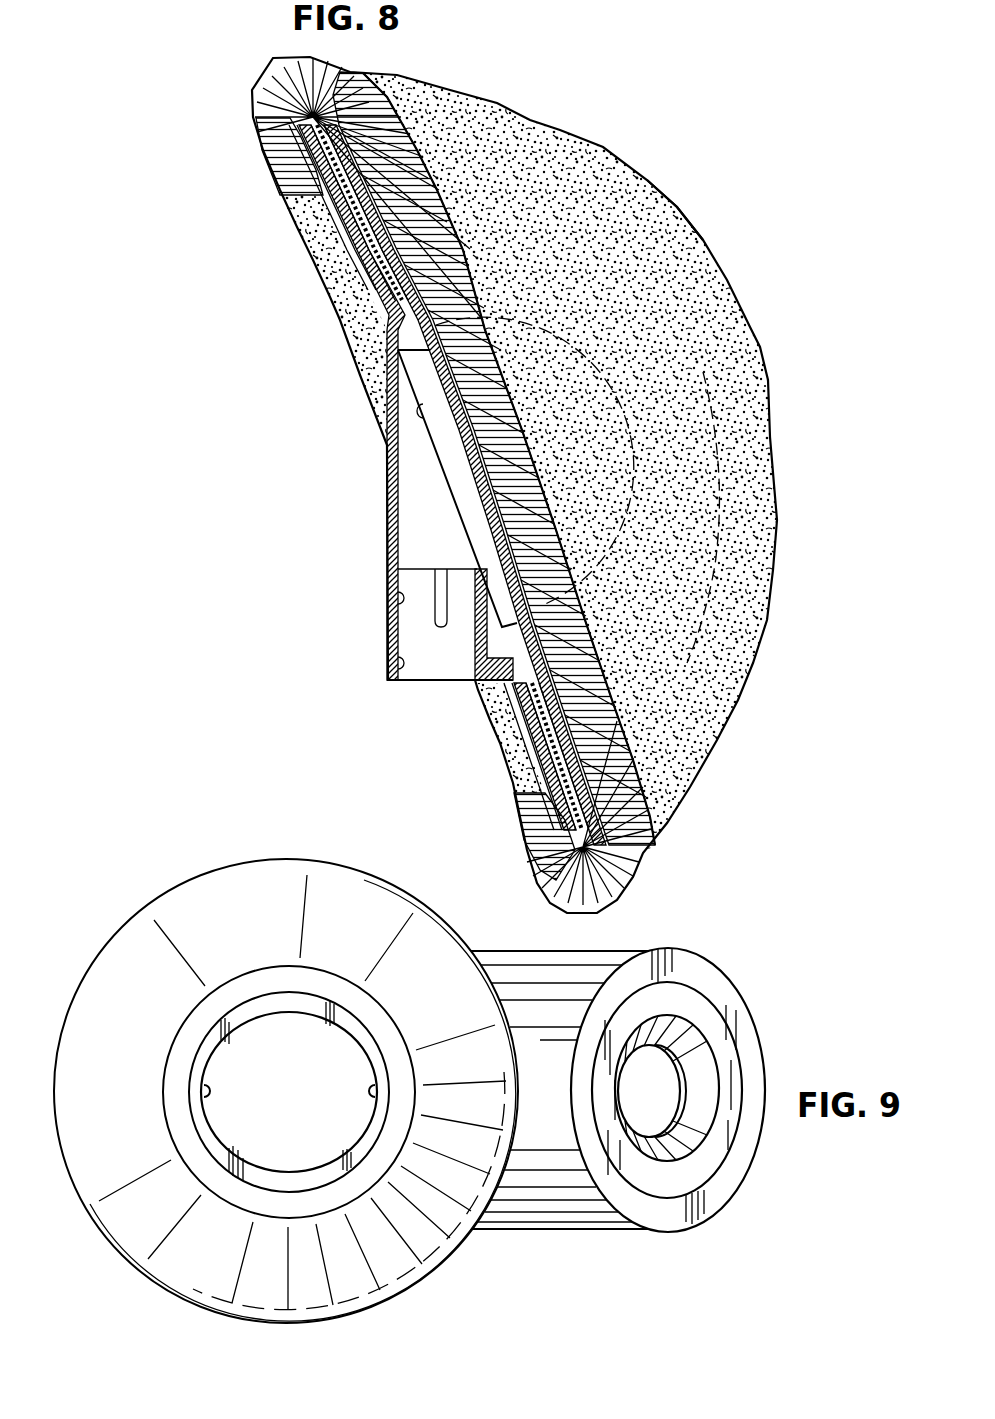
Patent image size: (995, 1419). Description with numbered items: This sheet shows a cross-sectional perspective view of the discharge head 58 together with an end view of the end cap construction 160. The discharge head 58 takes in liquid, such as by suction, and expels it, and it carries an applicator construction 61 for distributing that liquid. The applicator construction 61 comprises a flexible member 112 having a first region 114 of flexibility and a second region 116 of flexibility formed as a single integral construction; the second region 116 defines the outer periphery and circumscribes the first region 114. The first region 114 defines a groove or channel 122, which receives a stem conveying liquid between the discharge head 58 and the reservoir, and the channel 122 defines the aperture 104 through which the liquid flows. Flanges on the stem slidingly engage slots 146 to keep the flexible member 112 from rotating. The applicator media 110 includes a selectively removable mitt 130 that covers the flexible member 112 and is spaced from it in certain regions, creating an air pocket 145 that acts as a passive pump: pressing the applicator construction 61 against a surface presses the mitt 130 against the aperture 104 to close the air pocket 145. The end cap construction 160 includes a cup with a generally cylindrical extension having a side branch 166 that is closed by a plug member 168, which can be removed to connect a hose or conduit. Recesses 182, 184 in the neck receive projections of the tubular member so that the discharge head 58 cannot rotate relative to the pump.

In FIG. 8, the discharge head 58 is at (556, 84).
In FIG. 8, the applicator construction 61 is at (656, 170).
In FIG. 8, the applicator media 110 is at (676, 216).
In FIG. 8, the flexible member 112 is at (703, 378).
In FIG. 8, the first region 114 is at (347, 317).
In FIG. 8, the second region 116 is at (745, 530).
In FIG. 8, the air pocket 145 is at (424, 411).
In FIG. 8, the slots 146 is at (442, 580).
In FIG. 8, the aperture 104 is at (388, 607).
In FIG. 8, the channel 122 is at (388, 661).
In FIG. 8, the mitt 130 is at (635, 858).
In FIG. 9, the end cap construction 160 is at (166, 860).
In FIG. 9, the side branch 166 is at (520, 968).
In FIG. 9, the plug member 168 is at (669, 1100).
In FIG. 9, the recess 182 is at (206, 1090).
In FIG. 9, the recess 184 is at (374, 1091).